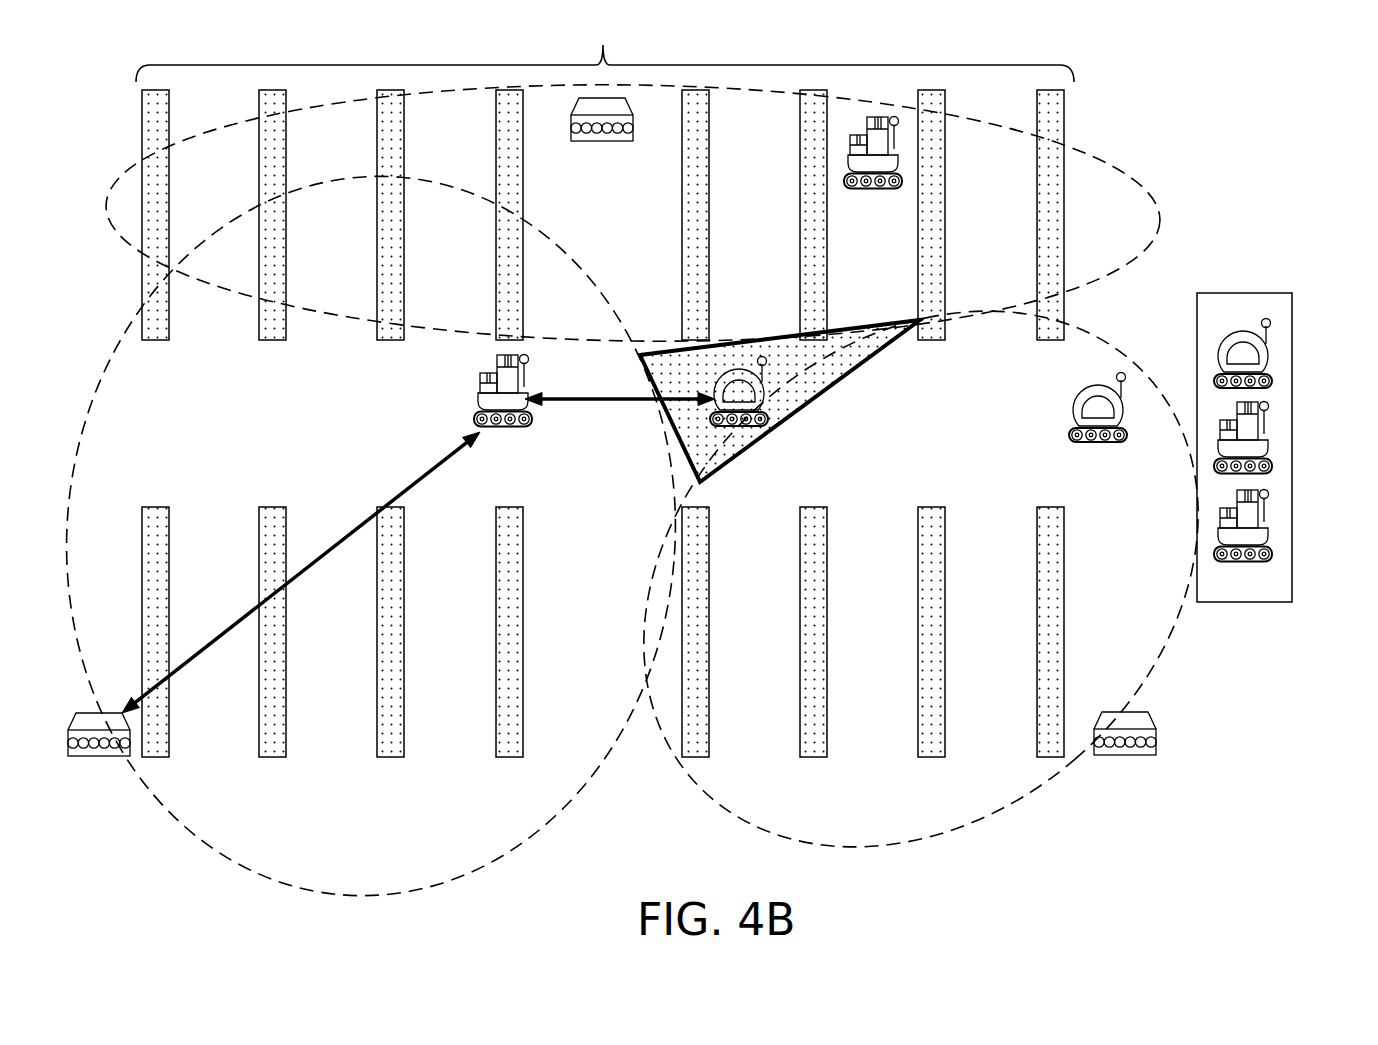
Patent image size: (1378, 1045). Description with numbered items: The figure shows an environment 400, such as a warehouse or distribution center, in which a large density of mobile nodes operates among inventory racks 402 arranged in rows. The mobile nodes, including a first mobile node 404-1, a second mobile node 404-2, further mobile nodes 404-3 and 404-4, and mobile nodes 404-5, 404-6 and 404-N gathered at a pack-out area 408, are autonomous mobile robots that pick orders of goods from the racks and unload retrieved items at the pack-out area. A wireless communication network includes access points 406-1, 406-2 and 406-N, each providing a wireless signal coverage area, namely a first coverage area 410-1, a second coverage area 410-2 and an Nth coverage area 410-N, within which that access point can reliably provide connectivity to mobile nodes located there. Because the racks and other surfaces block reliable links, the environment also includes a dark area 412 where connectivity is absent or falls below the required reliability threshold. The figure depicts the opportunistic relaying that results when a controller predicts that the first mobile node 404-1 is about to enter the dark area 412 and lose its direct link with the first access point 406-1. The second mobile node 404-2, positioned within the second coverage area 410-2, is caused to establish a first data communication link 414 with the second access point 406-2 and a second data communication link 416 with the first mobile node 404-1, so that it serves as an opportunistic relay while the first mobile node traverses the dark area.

The environment 400 is at (1256, 100).
The inventory racks 402 is at (605, 386).
The first mobile node 404-1 is at (741, 427).
The second mobile node 404-2 is at (500, 427).
The mobile node 404-3 is at (850, 189).
The mobile node 404-4 is at (1095, 443).
The mobile node 404-5 is at (1268, 352).
The mobile node 404-6 is at (1265, 440).
The Nth mobile node 404-N is at (1258, 515).
The first access point 406-1 is at (1110, 757).
The second access point 406-2 is at (83, 756).
The Nth access point 406-N is at (586, 141).
The pack-out area 408 is at (1244, 292).
The first coverage area 410-1 is at (756, 818).
The second coverage area 410-2 is at (516, 852).
The Nth coverage area 410-N is at (1108, 157).
The dark area 412 is at (685, 465).
The first data communication link 414 is at (413, 485).
The second data communication link 416 is at (560, 398).